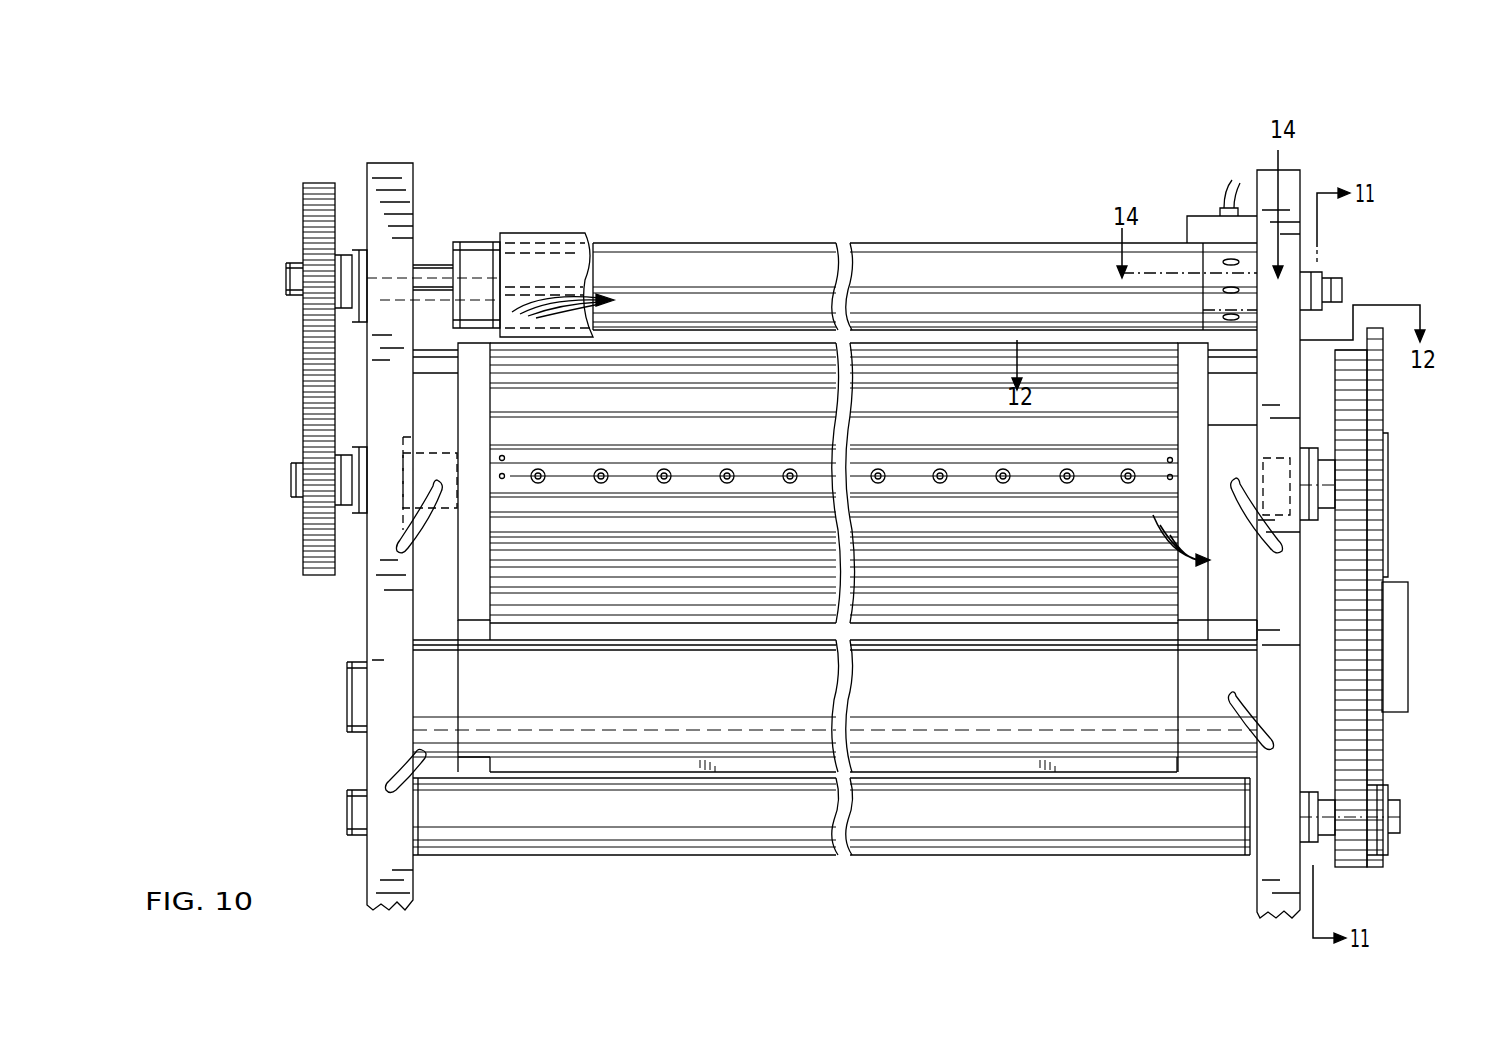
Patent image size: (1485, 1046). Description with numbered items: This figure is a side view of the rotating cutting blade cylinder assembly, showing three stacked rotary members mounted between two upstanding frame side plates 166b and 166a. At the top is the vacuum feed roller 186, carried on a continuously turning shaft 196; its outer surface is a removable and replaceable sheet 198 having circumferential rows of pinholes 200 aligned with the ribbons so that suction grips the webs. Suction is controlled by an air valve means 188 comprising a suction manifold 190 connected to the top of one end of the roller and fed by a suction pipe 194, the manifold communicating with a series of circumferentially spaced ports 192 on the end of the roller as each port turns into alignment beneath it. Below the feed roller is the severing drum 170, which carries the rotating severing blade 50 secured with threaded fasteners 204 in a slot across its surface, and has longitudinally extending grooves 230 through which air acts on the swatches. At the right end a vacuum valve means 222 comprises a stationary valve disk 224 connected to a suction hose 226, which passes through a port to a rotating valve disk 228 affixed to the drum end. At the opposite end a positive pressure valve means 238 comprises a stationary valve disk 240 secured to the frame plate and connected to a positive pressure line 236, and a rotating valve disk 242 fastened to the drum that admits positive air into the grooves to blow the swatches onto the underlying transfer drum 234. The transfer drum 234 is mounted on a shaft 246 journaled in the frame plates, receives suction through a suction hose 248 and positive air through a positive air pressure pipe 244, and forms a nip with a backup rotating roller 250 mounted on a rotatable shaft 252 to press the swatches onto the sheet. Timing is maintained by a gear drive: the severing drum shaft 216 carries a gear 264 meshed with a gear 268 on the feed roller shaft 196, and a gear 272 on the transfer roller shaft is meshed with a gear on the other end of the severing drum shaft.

The frame side plate 166b is at (397, 168).
The frame side plate 166a is at (1292, 175).
The vacuum feed roller 186 is at (937, 262).
The suction manifold 190 is at (1200, 222).
The air valve means 188 is at (1180, 158).
The suction pipe 194 is at (1232, 193).
The ports 192 is at (1222, 290).
The removable and replaceable sheet 198 is at (503, 236).
The pinholes 200 is at (589, 303).
The shaft 196 is at (285, 286).
The gear 268 is at (304, 345).
The gear 264 is at (303, 552).
The shaft 216 is at (290, 478).
The stationary valve disk 240 is at (457, 453).
The severing drum 170 is at (712, 443).
The rotating severing blade 50 is at (912, 470).
The threaded fasteners 204 is at (1125, 470).
The rotating valve disk 242 is at (478, 415).
The positive pressure valve means 238 is at (430, 395).
The rotating valve disk 228 is at (1195, 463).
The stationary valve disk 224 is at (1258, 455).
The suction hose 226 is at (398, 548).
The grooves 230 is at (1203, 544).
The vacuum valve means 222 is at (1245, 400).
The gear 272 is at (1383, 668).
The transfer drum 234 is at (596, 688).
The positive pressure line 236 is at (660, 718).
The suction hose 248 is at (1205, 718).
The positive air pressure pipe 244 is at (397, 776).
The shaft 246 is at (346, 695).
The rotatable shaft 252 is at (346, 812).
The backup rotating roller 250 is at (656, 815).